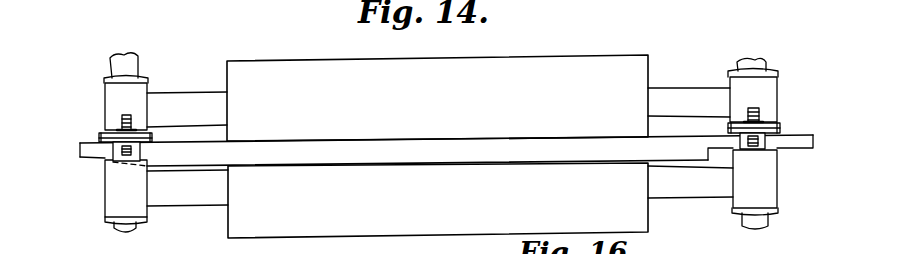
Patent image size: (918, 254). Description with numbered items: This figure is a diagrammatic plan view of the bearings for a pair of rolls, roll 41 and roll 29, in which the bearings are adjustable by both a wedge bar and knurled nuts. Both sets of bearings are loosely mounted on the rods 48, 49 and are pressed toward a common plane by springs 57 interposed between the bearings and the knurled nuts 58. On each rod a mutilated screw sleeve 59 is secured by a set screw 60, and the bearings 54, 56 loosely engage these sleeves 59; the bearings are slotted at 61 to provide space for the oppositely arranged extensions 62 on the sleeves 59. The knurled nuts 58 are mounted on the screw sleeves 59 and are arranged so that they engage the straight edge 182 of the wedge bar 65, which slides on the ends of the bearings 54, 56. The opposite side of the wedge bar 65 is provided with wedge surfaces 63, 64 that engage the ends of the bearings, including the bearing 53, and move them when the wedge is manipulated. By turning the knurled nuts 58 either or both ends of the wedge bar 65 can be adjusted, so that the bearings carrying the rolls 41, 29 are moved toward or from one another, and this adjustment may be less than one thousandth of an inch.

The roll 41 is at (562, 65).
The roll 29 is at (433, 228).
The wedge bar 65 is at (84, 150).
The straight edge 182 is at (218, 138).
The wedge surface 63 is at (724, 152).
The bearing 56 is at (108, 90).
The bearing 54 is at (733, 80).
The bearing 53 is at (778, 187).
The spring 57 is at (142, 78).
The rod 49 is at (127, 57).
The rod 48 is at (752, 59).
The mutilated threaded sleeve 59 is at (100, 136).
The set screw 60 is at (151, 137).
The knurled nut 58 is at (155, 141).
The slot 61 is at (127, 116).
The extension 62 is at (118, 123).
The wedge surface 64 is at (105, 159).